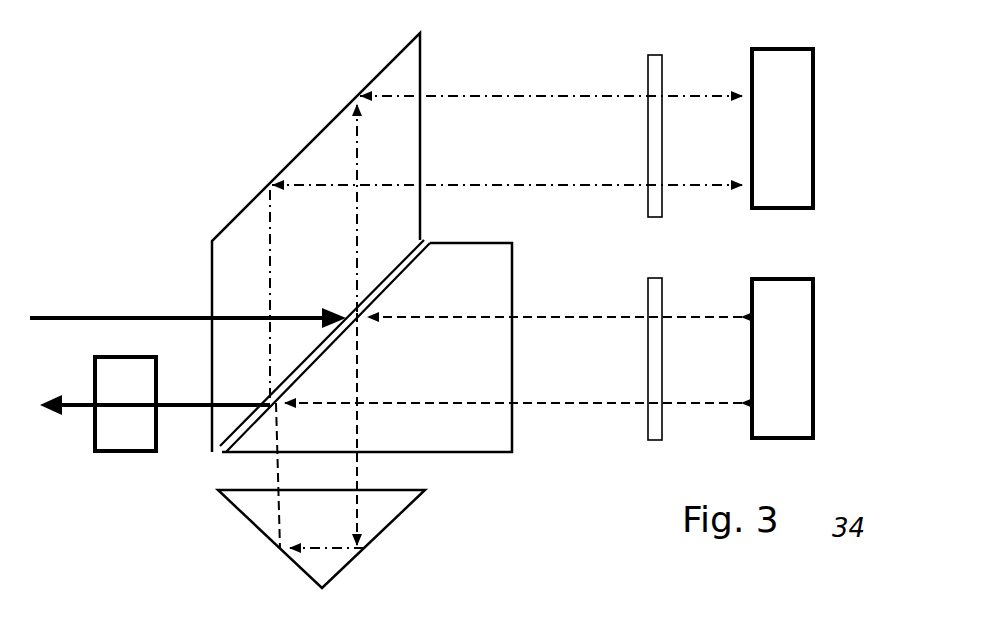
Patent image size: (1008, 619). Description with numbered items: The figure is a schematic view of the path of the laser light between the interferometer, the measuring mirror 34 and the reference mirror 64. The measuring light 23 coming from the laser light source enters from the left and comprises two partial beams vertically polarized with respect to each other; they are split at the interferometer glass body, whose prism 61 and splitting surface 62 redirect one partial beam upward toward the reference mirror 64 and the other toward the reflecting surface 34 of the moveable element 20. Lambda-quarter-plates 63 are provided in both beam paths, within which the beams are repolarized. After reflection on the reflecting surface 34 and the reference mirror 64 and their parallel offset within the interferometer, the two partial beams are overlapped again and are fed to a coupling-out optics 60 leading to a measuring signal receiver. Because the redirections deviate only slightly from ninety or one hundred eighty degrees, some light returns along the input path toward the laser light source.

The moveable element 20 is at (822, 348).
The measuring light 23 is at (143, 316).
The measuring mirror 34 is at (793, 375).
The coupling-out optics 60 is at (112, 445).
The beam splitter prism 61 is at (232, 206).
The dichroic mirror surface 62 is at (393, 266).
The lambda-quarter-plates 63 is at (657, 75).
The reference mirror 64 is at (803, 140).